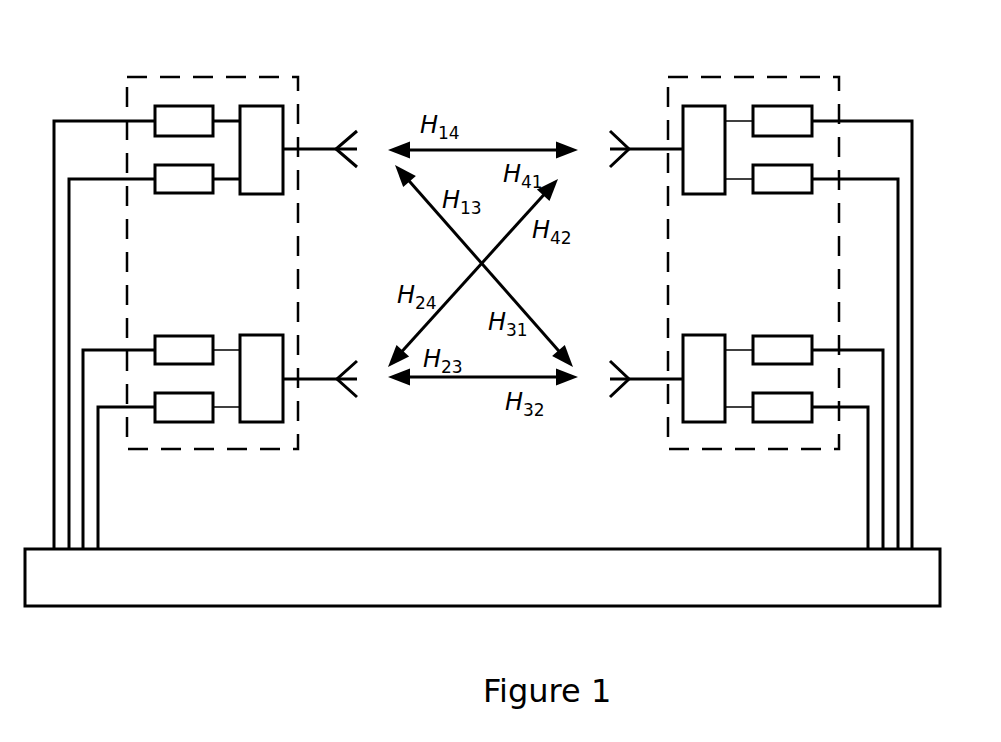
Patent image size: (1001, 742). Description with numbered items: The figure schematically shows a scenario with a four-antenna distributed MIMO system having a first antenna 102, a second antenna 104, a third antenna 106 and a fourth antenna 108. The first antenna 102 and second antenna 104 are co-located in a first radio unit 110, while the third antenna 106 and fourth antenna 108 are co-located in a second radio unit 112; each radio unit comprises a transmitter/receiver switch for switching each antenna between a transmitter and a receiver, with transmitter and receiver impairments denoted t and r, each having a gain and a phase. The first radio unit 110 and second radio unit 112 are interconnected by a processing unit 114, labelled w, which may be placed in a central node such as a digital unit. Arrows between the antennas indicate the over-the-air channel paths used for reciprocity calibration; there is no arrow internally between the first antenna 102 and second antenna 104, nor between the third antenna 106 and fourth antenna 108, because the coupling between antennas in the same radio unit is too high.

The first antenna 102 is at (312, 149).
The second antenna 104 is at (313, 379).
The third antenna 106 is at (653, 379).
The fourth antenna 108 is at (653, 149).
The first radio unit 110 is at (237, 77).
The second radio unit 112 is at (727, 77).
The processing unit 114 is at (385, 549).